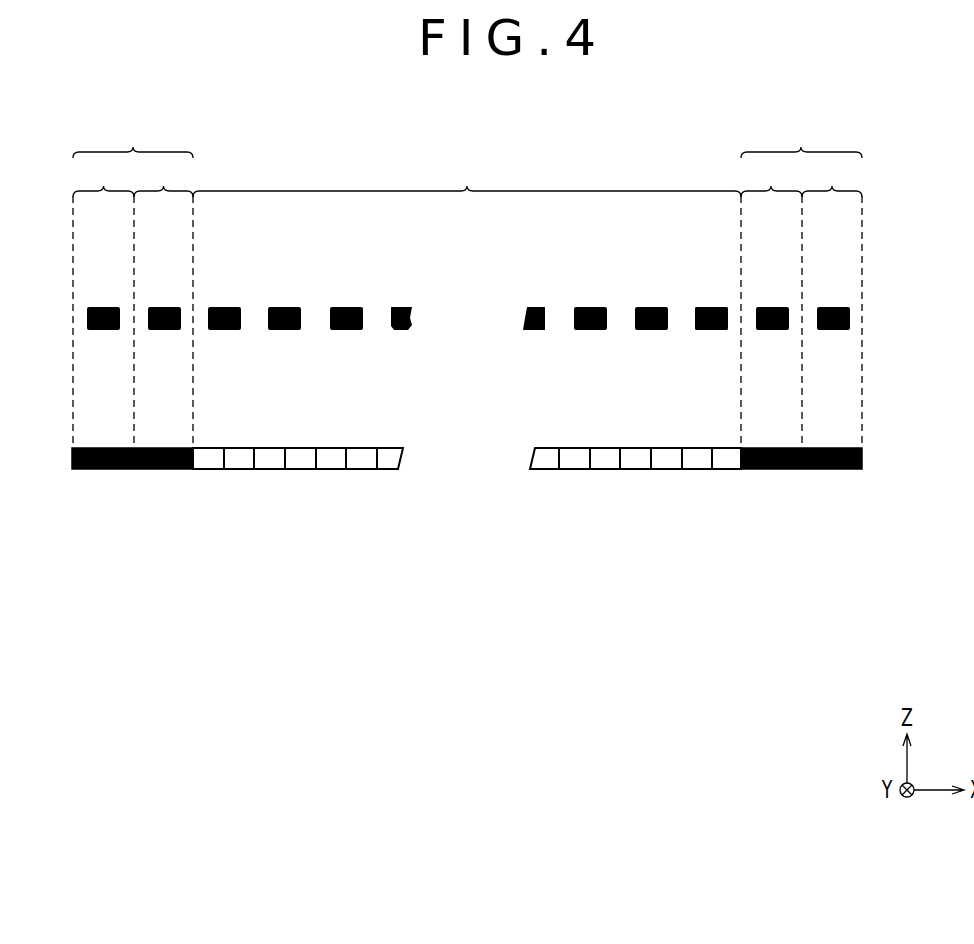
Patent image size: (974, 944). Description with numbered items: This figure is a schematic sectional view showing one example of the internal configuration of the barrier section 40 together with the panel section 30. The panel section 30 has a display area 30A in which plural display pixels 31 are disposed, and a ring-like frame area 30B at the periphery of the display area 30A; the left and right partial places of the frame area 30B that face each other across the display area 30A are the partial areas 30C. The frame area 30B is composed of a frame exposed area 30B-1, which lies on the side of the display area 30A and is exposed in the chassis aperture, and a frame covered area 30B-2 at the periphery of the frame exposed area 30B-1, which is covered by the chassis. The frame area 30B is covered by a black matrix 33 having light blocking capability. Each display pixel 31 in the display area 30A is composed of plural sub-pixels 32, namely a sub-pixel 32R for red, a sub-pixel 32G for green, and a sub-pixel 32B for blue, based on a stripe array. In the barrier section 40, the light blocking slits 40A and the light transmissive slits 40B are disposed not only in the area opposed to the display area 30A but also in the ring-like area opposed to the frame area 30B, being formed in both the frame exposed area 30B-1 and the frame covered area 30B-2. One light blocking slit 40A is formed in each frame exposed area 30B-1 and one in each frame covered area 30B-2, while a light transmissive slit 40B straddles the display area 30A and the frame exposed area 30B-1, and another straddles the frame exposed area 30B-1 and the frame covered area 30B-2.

The panel section 30 is at (517, 401).
The display area 30A is at (465, 423).
The frame area 30B is at (467, 282).
The partial area 30C is at (467, 137).
The frame exposed area 30B-1 is at (468, 178).
The frame covered area 30B-2 is at (467, 178).
The display pixel 31 is at (465, 567).
The sub-pixel 32 is at (465, 545).
The sub-pixel for red 32R is at (406, 545).
The sub-pixel for green 32G is at (466, 545).
The sub-pixel for blue 32B is at (525, 545).
The black matrix 33 is at (92, 470).
The barrier section 40 is at (524, 283).
The light blocking slit 40A is at (588, 307).
The light transmissive slit 40B is at (682, 312).